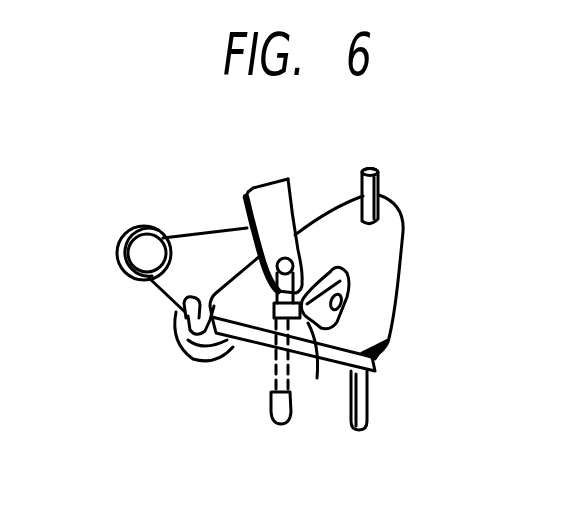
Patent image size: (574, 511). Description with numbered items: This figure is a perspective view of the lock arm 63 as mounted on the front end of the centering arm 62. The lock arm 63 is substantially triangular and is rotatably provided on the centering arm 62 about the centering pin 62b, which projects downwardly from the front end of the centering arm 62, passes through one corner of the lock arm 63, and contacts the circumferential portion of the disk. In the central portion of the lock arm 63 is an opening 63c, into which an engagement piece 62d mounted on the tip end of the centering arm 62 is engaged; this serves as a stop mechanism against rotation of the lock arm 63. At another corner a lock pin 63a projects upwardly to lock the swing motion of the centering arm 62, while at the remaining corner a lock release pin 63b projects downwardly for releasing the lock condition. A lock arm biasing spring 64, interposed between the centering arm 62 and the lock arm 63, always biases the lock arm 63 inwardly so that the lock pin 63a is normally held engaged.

The centering arm 62 is at (272, 197).
The centering pin 62b is at (276, 410).
The engagement piece 62d is at (317, 378).
The lock arm 63 is at (390, 255).
The lock pin 63a is at (381, 184).
The lock release pin 63b is at (368, 413).
The opening 63c is at (348, 293).
The lock arm biasing spring 64 is at (133, 273).